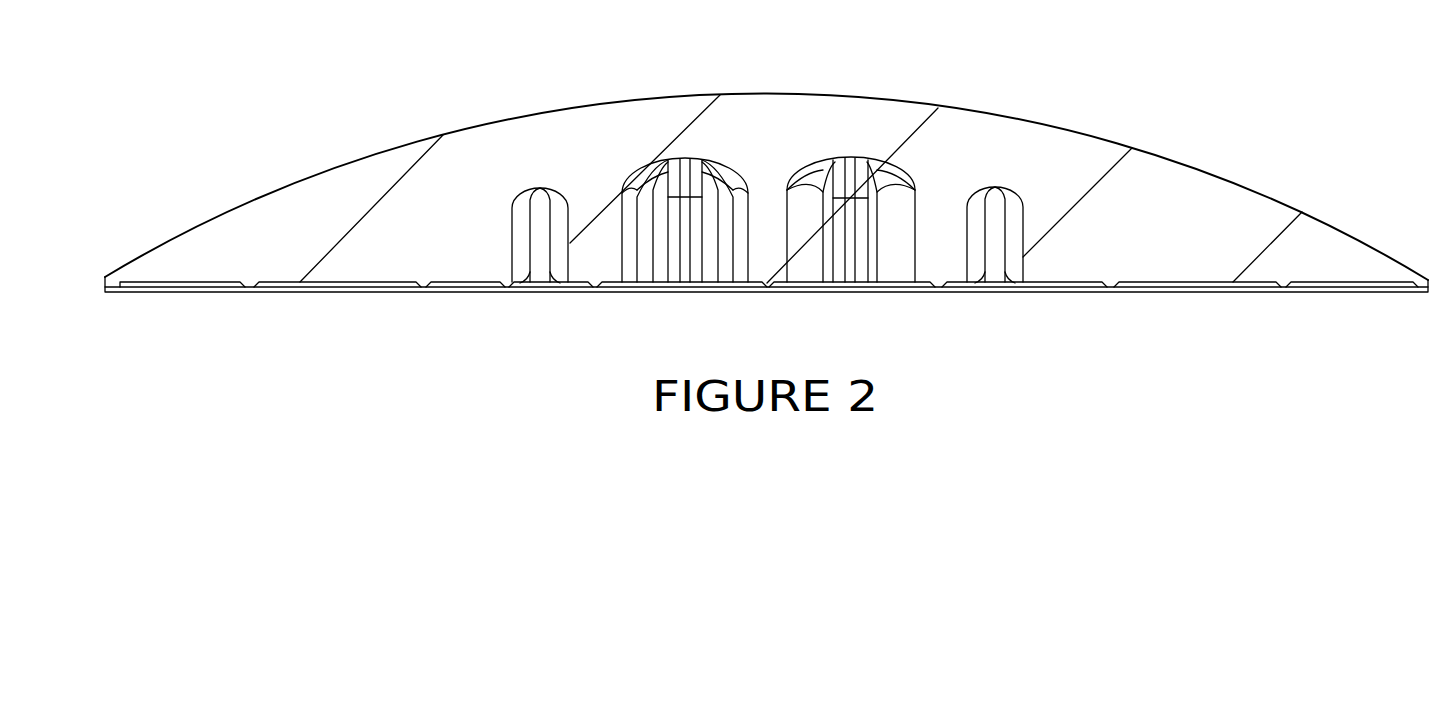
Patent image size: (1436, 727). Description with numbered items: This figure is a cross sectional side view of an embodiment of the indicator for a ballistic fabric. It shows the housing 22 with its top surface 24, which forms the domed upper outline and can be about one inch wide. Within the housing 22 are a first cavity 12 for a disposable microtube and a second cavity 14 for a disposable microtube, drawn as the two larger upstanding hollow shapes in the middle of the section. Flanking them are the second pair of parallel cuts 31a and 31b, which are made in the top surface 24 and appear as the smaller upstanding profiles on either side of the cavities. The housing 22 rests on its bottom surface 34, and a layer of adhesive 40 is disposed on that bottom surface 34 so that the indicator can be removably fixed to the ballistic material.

The first cavity 12 is at (683, 158).
The second cavity 14 is at (848, 160).
The housing 22 is at (357, 161).
The top surface 24 is at (1210, 170).
The parallel cut 31a is at (997, 187).
The parallel cut 31b is at (541, 187).
The bottom surface 34 is at (1283, 293).
The layer of adhesive 40 is at (263, 292).